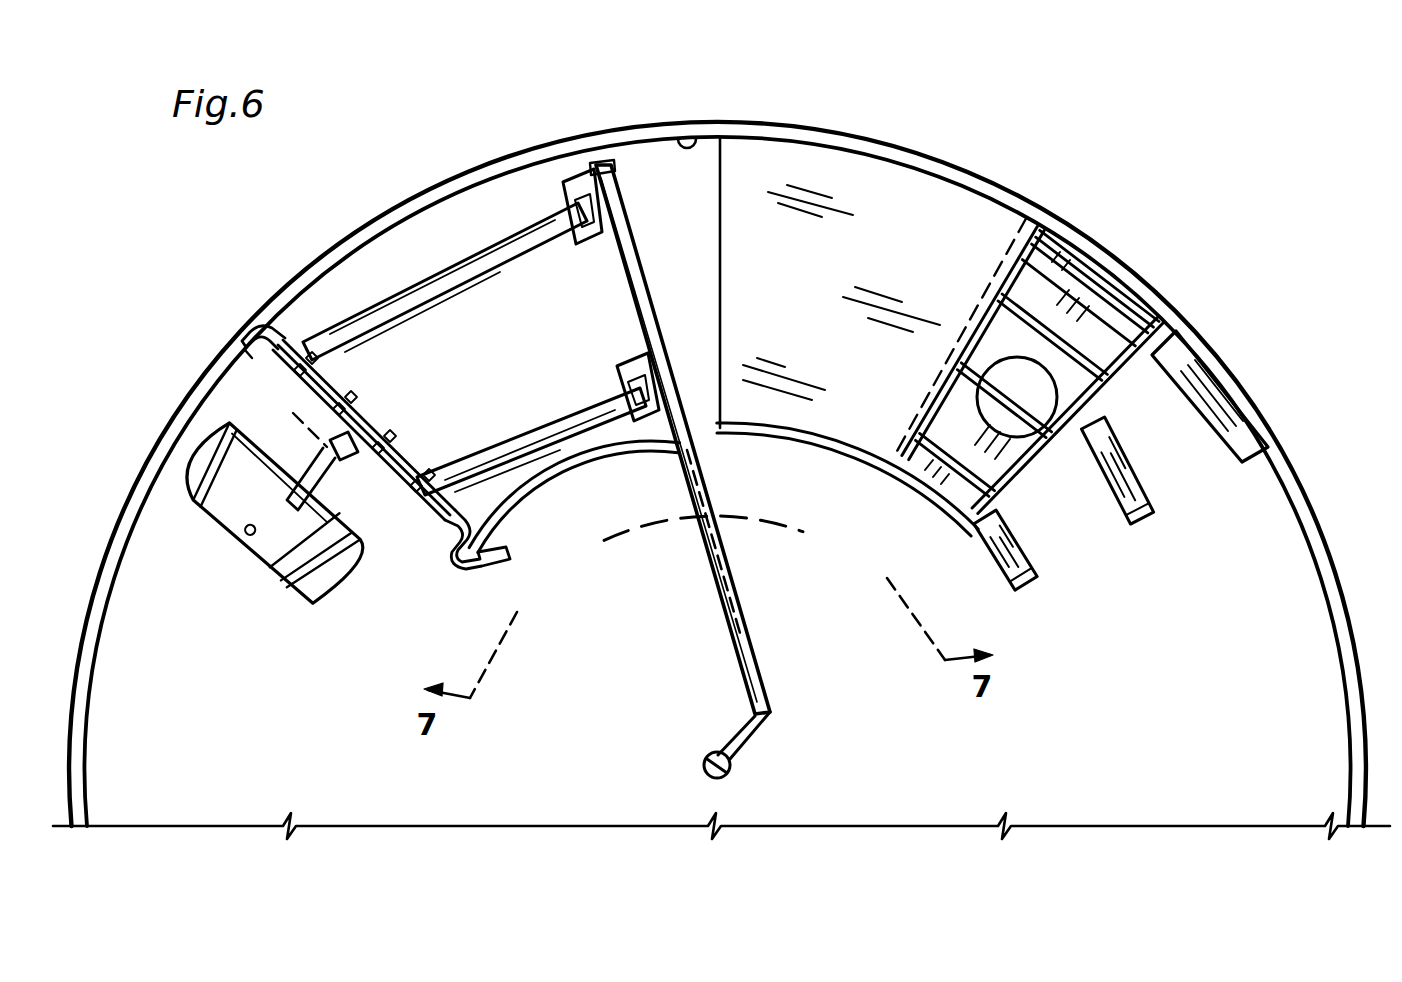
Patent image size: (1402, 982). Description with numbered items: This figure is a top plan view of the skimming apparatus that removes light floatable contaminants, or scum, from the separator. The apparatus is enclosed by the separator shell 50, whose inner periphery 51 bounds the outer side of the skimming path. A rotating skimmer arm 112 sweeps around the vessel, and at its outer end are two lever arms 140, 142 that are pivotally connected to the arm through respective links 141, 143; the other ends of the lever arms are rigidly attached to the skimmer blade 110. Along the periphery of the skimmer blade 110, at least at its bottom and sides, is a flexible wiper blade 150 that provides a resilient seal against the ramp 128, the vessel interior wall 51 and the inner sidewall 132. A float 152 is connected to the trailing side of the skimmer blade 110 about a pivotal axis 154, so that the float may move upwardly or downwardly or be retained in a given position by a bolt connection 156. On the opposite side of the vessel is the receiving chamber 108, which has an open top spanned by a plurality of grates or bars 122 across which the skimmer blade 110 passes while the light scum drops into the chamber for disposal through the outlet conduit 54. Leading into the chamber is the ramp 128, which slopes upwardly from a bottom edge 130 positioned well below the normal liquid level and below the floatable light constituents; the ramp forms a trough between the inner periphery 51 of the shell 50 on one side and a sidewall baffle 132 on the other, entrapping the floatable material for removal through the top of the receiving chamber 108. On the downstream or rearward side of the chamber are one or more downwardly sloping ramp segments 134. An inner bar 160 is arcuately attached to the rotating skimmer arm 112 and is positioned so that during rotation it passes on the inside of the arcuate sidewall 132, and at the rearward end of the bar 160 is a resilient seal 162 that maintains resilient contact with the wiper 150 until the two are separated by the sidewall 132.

The separator shell 50 is at (621, 134).
The inner periphery 51 is at (703, 141).
The outlet conduit 54 is at (1000, 368).
The receiving chamber 108 is at (1160, 334).
The skimmer blade 110 is at (370, 413).
The rotating skimmer arm 112 is at (752, 733).
The grates or bars 122 is at (1088, 275).
The ramp 128 is at (942, 246).
The bottom edge 130 is at (748, 240).
The sidewall baffle 132 is at (813, 440).
The ramp segments 134 is at (1118, 527).
The lever arm 140 is at (470, 263).
The link 141 is at (582, 244).
The lever arm 142 is at (552, 426).
The link 143 is at (628, 357).
The flexible wiper blade 150 is at (253, 336).
The float 152 is at (305, 592).
The pivotal axis 154 is at (307, 440).
The bolt connection 156 is at (345, 476).
The inner bar 160 is at (582, 482).
The resilient seal 162 is at (465, 560).